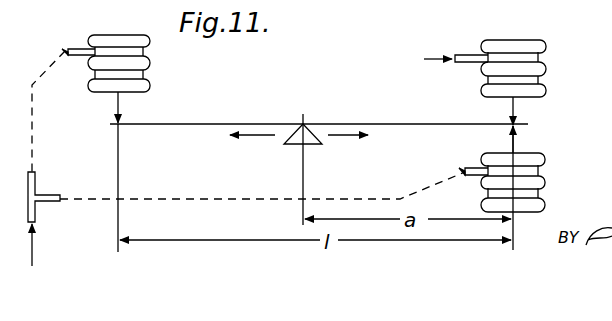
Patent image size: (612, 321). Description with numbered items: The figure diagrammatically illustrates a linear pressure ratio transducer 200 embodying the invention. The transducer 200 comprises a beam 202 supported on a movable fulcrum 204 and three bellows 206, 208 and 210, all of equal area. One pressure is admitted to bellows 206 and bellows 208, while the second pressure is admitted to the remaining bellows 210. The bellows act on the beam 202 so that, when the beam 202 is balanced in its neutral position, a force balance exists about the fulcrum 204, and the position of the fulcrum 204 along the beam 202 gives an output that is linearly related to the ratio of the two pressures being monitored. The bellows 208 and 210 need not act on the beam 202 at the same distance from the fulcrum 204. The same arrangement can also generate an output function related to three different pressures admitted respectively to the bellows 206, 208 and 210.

The transducer 200 is at (108, 172).
The beam 202 is at (132, 125).
The movable fulcrum 204 is at (311, 144).
The bellows 206 is at (144, 75).
The bellows 208 is at (545, 182).
The bellows 210 is at (544, 80).